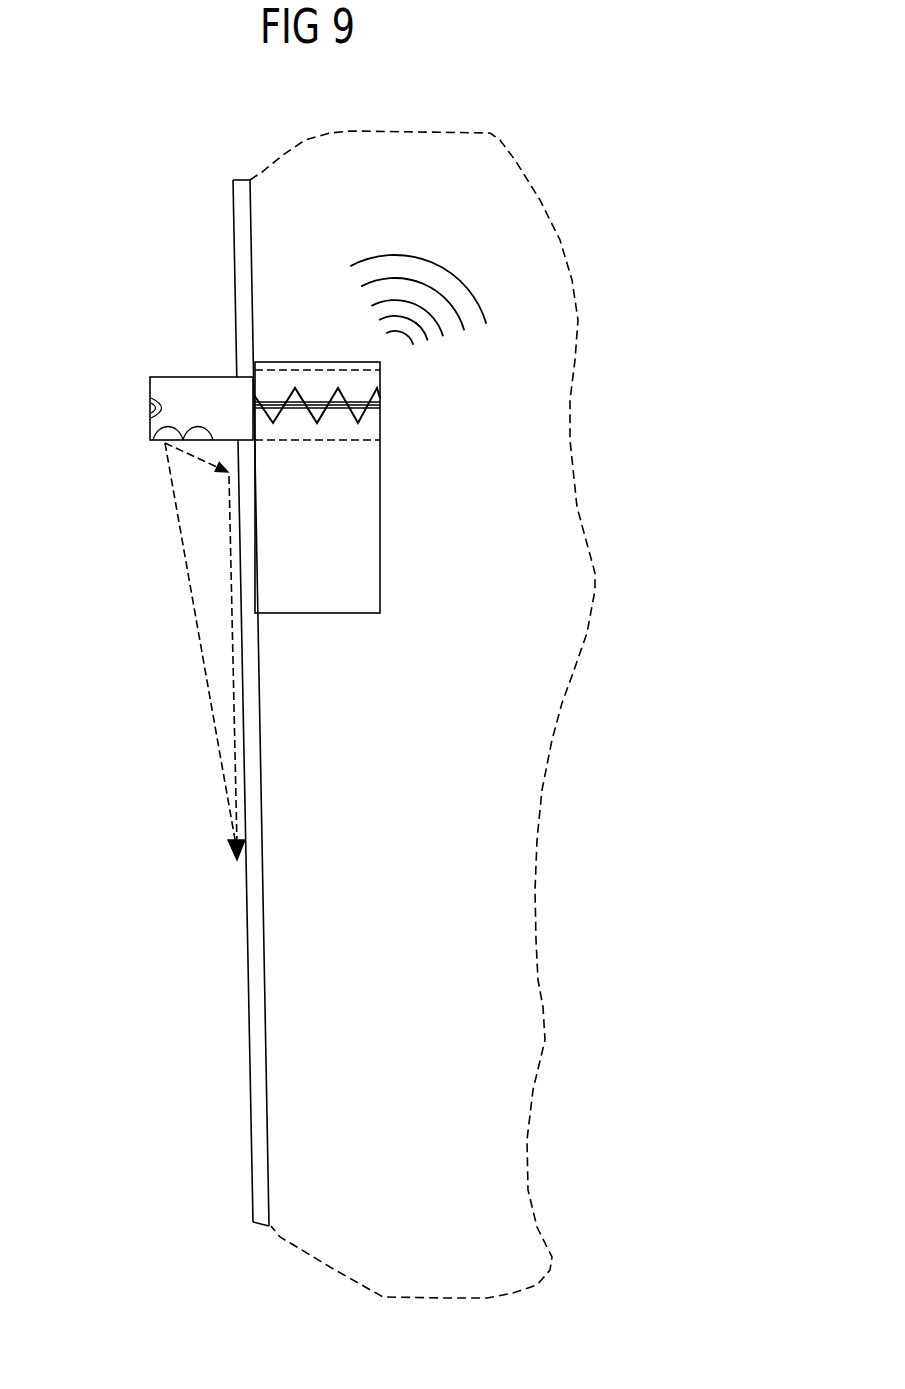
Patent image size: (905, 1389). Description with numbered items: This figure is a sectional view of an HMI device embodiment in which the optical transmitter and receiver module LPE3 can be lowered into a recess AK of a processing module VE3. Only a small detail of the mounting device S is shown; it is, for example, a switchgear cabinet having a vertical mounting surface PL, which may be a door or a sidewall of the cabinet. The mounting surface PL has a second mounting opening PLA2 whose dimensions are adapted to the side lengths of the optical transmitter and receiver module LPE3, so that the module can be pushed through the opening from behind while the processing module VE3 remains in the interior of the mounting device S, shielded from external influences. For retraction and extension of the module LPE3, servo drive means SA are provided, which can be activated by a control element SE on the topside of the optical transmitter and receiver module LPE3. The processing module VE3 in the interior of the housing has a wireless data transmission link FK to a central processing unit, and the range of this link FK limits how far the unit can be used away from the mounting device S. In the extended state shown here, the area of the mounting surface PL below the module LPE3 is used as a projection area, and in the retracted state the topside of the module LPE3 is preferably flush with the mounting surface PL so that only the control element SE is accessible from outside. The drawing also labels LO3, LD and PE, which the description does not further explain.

The mounting device S is at (307, 165).
The mounting surface PL is at (240, 216).
The second mounting opening PLA2 is at (240, 376).
The optical transmitter and receiver module LPE3 is at (185, 385).
The control element SE is at (150, 408).
The loudspeaker opening LO3 is at (152, 432).
The sound direction LD is at (200, 440).
The piezo element PE is at (240, 625).
The wireless data transmission link FK is at (473, 291).
The recess AK is at (357, 391).
The servo drive means SA is at (357, 418).
The processing module VE3 is at (367, 550).